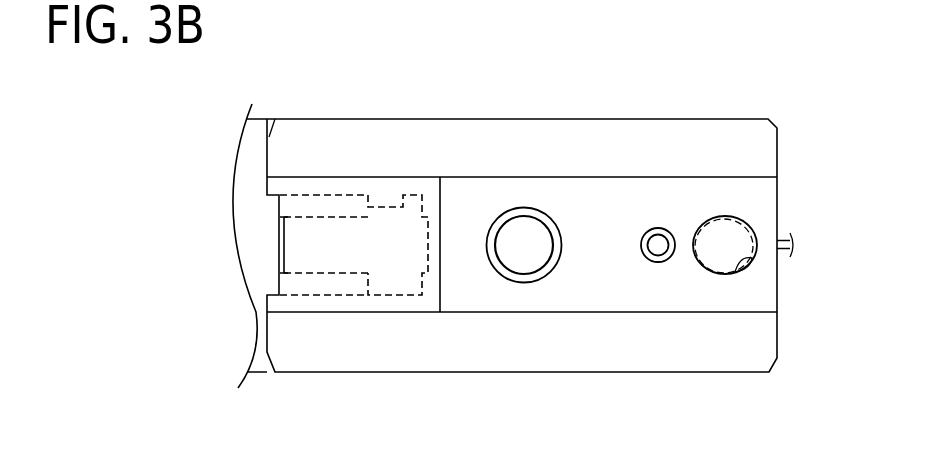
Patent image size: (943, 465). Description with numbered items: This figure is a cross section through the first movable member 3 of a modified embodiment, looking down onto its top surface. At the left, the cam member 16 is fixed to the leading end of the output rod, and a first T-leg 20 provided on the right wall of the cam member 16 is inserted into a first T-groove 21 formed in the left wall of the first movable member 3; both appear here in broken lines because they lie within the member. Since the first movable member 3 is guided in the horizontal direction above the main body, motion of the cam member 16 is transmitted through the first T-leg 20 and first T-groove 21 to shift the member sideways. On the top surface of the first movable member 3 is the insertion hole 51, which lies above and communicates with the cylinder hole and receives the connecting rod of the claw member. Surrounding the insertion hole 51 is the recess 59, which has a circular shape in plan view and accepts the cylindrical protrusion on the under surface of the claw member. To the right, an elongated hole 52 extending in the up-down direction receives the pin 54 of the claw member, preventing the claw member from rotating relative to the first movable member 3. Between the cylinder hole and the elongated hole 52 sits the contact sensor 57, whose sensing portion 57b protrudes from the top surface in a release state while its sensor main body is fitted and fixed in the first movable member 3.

The first movable member 3 is at (447, 112).
The cam member 16 is at (246, 220).
The first T-leg 20 is at (338, 217).
The first T-groove 21 is at (408, 200).
The insertion hole 51 is at (525, 222).
The elongated hole 52 is at (735, 272).
The pin 54 is at (745, 218).
The contact sensor 57 is at (664, 214).
The sensing portion 57b is at (645, 232).
The recess 59 is at (553, 260).